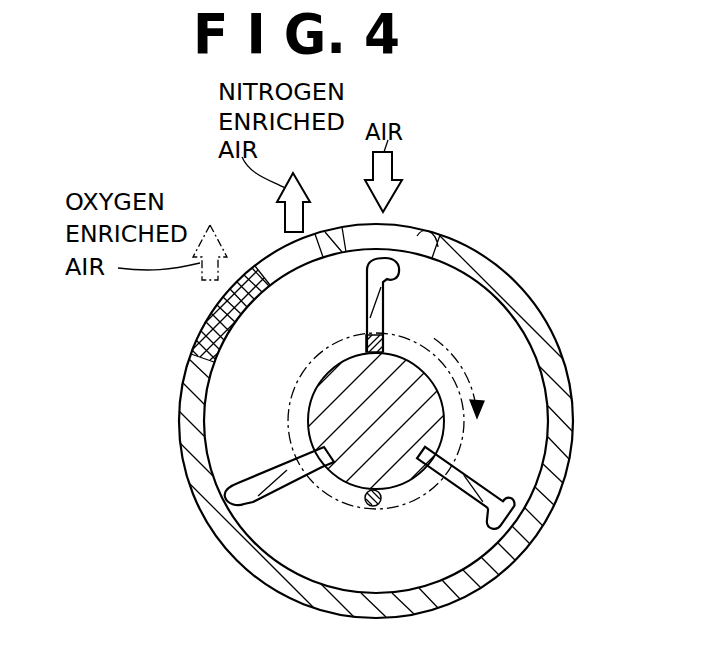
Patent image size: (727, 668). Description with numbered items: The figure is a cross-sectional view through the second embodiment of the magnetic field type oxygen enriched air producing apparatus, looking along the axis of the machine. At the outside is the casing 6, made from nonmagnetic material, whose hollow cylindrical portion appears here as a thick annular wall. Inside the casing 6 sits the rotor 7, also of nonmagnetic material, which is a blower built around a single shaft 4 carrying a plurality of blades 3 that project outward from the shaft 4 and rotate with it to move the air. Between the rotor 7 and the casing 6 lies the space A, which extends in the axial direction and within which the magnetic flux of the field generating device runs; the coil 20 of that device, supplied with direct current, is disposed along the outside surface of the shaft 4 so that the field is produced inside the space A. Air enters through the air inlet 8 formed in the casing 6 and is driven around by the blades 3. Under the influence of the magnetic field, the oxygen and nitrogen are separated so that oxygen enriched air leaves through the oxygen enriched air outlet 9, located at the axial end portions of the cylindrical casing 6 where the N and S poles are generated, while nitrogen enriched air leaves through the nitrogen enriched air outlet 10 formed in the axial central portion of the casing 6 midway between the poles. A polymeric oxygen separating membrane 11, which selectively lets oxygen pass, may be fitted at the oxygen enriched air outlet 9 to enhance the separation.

The blade 3 is at (386, 305).
The shaft 4 is at (332, 407).
The casing 6 is at (505, 285).
The rotor 7 is at (487, 478).
The air inlet 8 is at (428, 230).
The oxygen enriched air outlet 9 is at (208, 313).
The nitrogen enriched air outlet 10 is at (316, 237).
The polymeric oxygen separating membrane 11 is at (203, 357).
The coil 20 is at (365, 347).
The space A is at (513, 333).